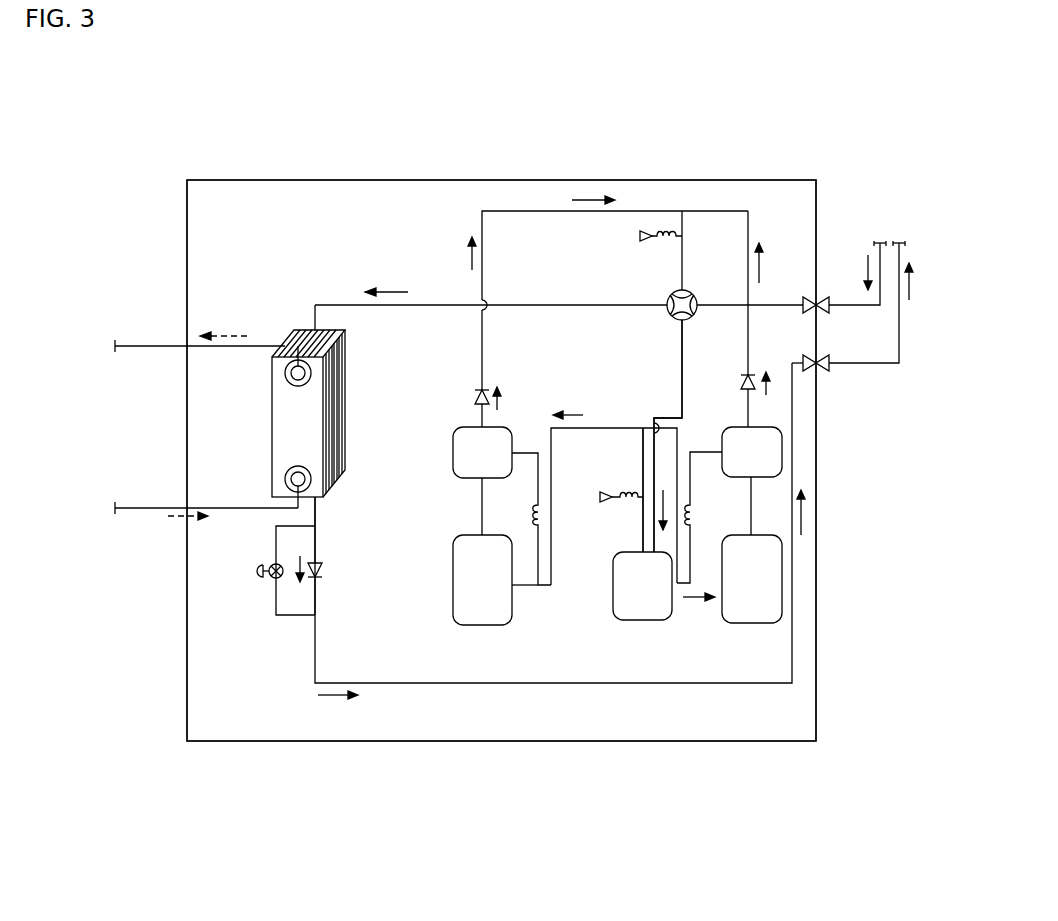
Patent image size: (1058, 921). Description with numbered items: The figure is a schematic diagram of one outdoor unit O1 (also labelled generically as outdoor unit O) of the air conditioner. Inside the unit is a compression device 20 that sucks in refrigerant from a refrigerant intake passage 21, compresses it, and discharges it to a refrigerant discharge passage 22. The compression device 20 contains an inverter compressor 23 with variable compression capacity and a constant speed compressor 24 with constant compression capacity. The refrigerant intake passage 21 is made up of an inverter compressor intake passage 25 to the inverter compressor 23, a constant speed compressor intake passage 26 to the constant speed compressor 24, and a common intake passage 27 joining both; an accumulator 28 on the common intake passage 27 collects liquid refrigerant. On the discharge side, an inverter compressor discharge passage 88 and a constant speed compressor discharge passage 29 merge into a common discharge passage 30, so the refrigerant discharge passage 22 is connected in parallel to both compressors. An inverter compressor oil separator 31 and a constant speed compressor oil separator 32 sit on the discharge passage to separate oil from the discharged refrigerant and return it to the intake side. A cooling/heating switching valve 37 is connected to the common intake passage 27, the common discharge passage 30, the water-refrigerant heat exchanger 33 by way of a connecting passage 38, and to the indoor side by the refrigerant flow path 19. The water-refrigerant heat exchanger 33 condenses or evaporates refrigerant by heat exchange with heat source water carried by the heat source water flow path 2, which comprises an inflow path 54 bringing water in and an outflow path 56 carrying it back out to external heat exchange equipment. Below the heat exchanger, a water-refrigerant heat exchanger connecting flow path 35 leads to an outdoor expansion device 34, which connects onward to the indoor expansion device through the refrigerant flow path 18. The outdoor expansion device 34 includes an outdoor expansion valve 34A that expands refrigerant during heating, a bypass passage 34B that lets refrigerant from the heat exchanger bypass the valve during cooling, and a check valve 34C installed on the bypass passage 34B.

The outdoor unit O1 is at (150, 178).
The outdoor unit O is at (800, 755).
The heat source water flow path 2 is at (206, 426).
The refrigerant flow path 18 is at (867, 363).
The refrigerant flow path 19 is at (847, 305).
The compression device 20 is at (455, 652).
The refrigerant intake passage 21 is at (601, 452).
The refrigerant discharge passage 22 is at (638, 265).
The inverter compressor 23 is at (453, 580).
The constant speed compressor 24 is at (782, 590).
The inverter compressor intake passage 25 is at (592, 428).
The constant speed compressor intake passage 26 is at (654, 428).
The common intake passage 27 is at (641, 466).
The accumulator 28 is at (648, 622).
The constant speed compressor discharge passage 29 is at (771, 283).
The common discharge passage 30 is at (682, 252).
The inverter compressor oil separator 31 is at (453, 453).
The constant speed compressor oil separator 32 is at (728, 427).
The water-refrigerant heat exchanger 33 is at (285, 333).
The outdoor expansion device 34 is at (259, 598).
The outdoor expansion valve 34A is at (272, 578).
The bypass passage 34B is at (316, 605).
The check valve 34C is at (349, 575).
The water-refrigerant heat exchanger connecting flow path 35 is at (317, 510).
The cooling/heating switching valve 37 is at (694, 296).
The connecting passage 38 is at (433, 305).
The inflow path 54 is at (206, 481).
The outflow path 56 is at (148, 350).
The inverter compressor discharge passage 88 is at (636, 211).